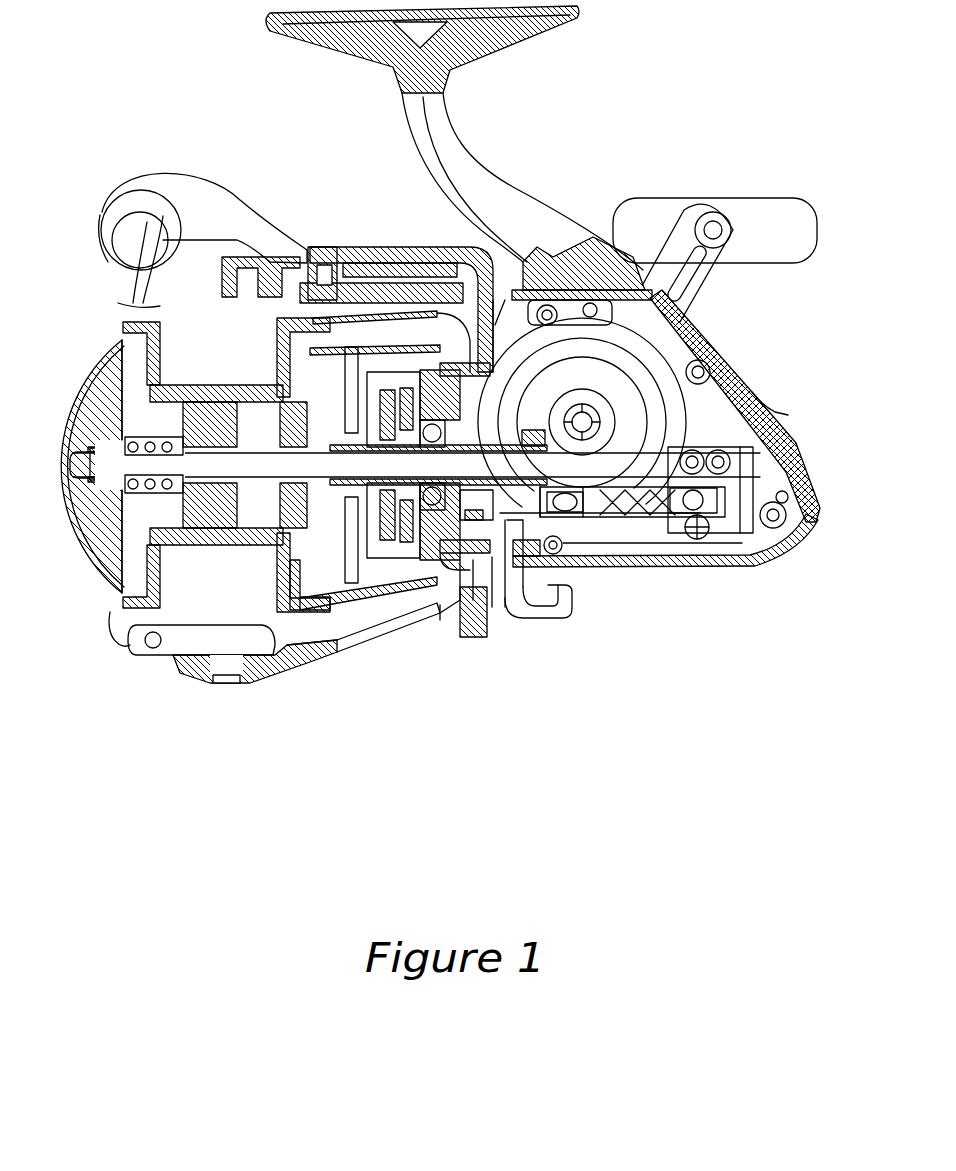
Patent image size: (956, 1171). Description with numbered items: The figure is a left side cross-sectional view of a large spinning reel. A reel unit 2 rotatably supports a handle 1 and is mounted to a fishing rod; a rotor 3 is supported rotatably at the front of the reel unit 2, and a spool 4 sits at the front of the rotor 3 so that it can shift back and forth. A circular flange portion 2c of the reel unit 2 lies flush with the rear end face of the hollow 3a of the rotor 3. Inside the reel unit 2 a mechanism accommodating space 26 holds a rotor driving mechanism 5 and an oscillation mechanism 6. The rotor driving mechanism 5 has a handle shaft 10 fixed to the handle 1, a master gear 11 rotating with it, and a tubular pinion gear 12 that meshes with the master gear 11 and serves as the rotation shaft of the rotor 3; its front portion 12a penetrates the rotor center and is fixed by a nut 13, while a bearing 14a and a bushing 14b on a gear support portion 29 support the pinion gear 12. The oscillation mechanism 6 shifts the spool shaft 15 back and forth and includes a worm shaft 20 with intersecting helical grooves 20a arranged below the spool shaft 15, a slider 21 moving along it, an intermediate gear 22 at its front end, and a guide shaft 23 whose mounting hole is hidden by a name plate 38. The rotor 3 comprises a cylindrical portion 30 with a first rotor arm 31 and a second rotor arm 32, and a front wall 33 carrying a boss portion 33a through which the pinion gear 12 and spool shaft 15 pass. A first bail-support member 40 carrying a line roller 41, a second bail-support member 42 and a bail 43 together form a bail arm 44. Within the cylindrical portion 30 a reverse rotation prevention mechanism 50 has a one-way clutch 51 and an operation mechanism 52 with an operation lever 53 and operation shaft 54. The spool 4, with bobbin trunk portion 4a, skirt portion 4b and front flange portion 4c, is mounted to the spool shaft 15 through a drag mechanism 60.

The handle 1 is at (745, 215).
The reel unit 2 is at (600, 227).
The circular flange portion 2c is at (508, 300).
The rotor 3 is at (425, 248).
The hollow 3a is at (452, 265).
The spool 4 is at (232, 548).
The bobbin trunk portion 4a is at (228, 385).
The skirt portion 4b is at (345, 262).
The front flange portion 4c is at (155, 345).
The rotor driving mechanism 5 is at (640, 417).
The oscillation mechanism 6 is at (657, 550).
The handle shaft 10 is at (628, 400).
The master gear 11 is at (562, 295).
The pinion gear 12 is at (508, 567).
The front portion of pinion gear 12a is at (330, 428).
The nut 13 is at (355, 566).
The bearing 14a is at (482, 410).
The bushing 14b is at (545, 440).
The spool shaft 15 is at (455, 463).
The worm shaft 20 is at (697, 453).
The intersecting helical grooves 20a is at (630, 513).
The slider 21 is at (717, 527).
The intermediate gear 22 is at (470, 577).
The guide shaft 23 is at (598, 520).
The mechanism accommodating space 26 is at (685, 320).
The gear support portion 29 is at (588, 410).
The cylindrical portion 30 is at (345, 600).
The first rotor arm 31 is at (380, 265).
The second rotor arm 32 is at (343, 653).
The front wall 33 is at (350, 352).
The boss portion 33a is at (300, 505).
The name plate 38 is at (805, 433).
The first bail-support member 40 is at (250, 240).
The line roller 41 is at (142, 215).
The second bail-support member 42 is at (242, 656).
The bail 43 is at (148, 284).
The bail arm 44 is at (113, 283).
The reverse rotation prevention mechanism 50 is at (333, 660).
The one-way clutch 51 is at (388, 640).
The operation mechanism 52 is at (517, 618).
The operation lever 53 is at (537, 620).
The operation shaft 54 is at (443, 597).
The drag mechanism 60 is at (183, 560).